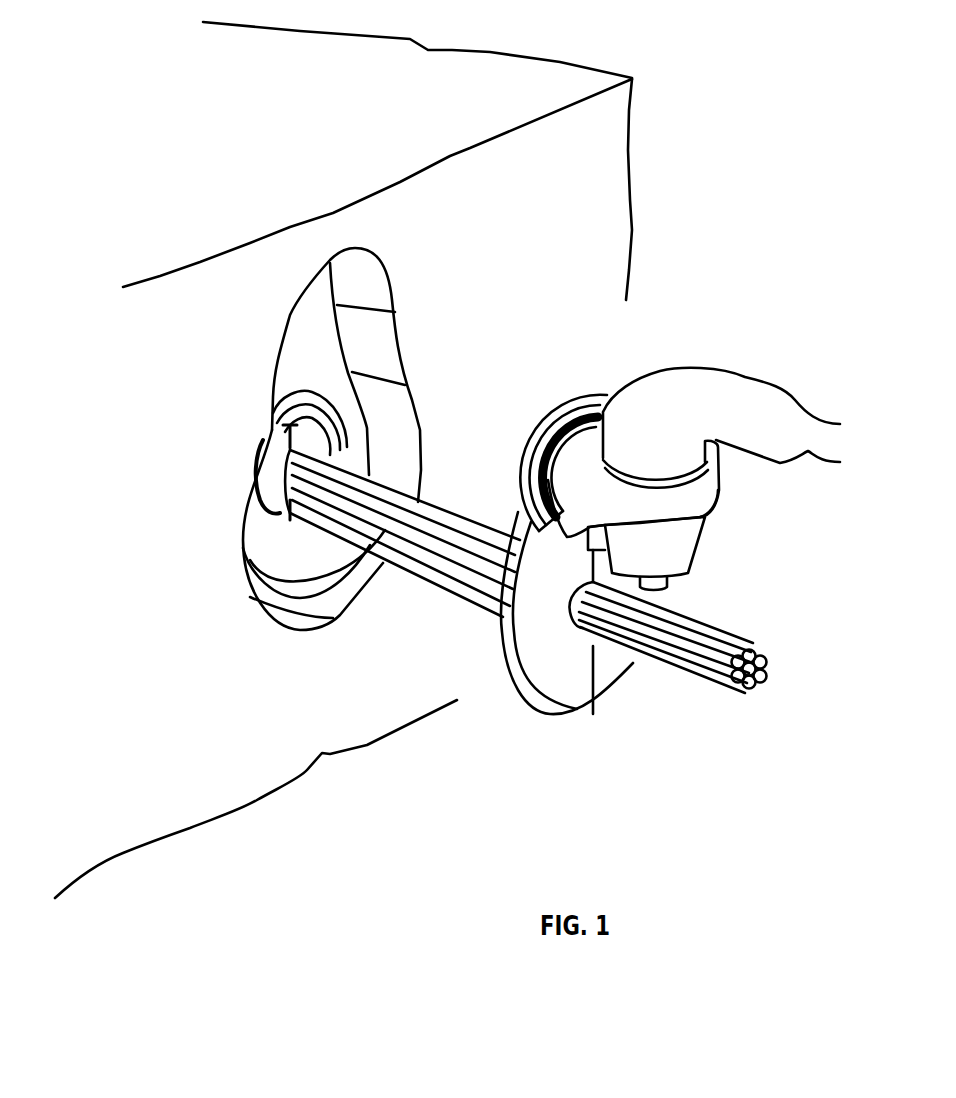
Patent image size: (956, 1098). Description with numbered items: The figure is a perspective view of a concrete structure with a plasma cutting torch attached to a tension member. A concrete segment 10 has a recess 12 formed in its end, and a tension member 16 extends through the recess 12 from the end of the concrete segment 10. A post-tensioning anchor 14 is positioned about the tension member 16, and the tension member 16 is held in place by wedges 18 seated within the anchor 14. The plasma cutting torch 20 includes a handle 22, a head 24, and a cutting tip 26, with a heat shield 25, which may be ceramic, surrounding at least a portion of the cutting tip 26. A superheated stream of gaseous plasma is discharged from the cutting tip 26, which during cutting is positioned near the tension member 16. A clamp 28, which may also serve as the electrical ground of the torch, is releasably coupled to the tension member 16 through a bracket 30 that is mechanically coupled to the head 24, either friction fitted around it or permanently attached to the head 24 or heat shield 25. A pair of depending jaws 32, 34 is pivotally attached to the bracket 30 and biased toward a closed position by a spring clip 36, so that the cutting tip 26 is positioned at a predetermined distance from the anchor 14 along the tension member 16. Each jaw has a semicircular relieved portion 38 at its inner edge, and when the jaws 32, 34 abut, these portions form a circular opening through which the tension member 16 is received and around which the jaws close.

The concrete segment 10 is at (426, 123).
The recess 12 is at (409, 437).
The post-tensioning anchor 14 is at (298, 393).
The tension member 16 is at (460, 568).
The wedges 18 is at (327, 418).
The plasma cutting torch 20 is at (714, 447).
The handle 22 is at (836, 445).
The head 24 is at (690, 387).
The heat shield 25 is at (677, 548).
The cutting tip 26 is at (667, 583).
The clamp 28 is at (609, 566).
The bracket 30 is at (710, 490).
The depending jaw 32 is at (555, 703).
The depending jaw 34 is at (613, 673).
The spring clip 36 is at (553, 413).
The semicircular relieved portion 38 is at (578, 583).